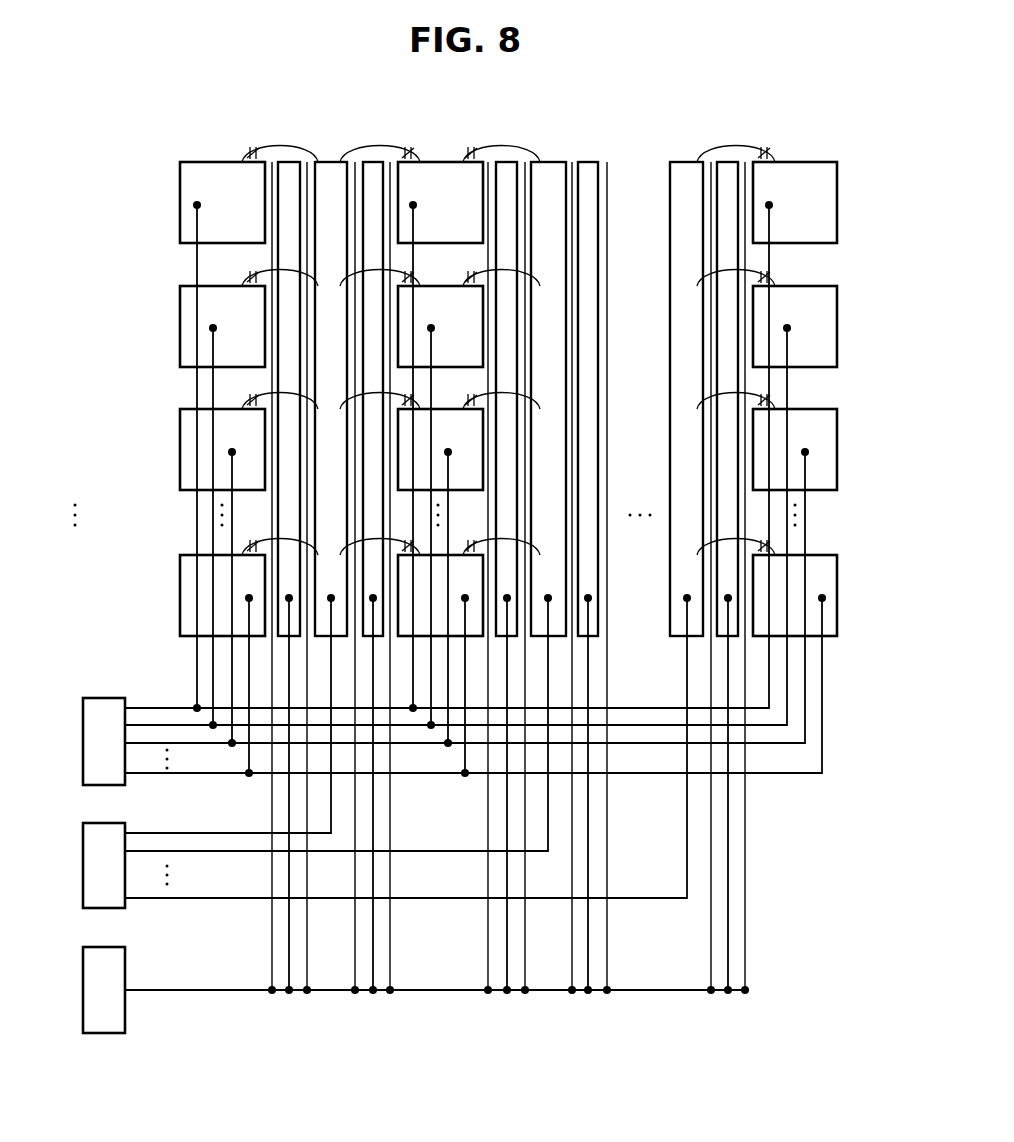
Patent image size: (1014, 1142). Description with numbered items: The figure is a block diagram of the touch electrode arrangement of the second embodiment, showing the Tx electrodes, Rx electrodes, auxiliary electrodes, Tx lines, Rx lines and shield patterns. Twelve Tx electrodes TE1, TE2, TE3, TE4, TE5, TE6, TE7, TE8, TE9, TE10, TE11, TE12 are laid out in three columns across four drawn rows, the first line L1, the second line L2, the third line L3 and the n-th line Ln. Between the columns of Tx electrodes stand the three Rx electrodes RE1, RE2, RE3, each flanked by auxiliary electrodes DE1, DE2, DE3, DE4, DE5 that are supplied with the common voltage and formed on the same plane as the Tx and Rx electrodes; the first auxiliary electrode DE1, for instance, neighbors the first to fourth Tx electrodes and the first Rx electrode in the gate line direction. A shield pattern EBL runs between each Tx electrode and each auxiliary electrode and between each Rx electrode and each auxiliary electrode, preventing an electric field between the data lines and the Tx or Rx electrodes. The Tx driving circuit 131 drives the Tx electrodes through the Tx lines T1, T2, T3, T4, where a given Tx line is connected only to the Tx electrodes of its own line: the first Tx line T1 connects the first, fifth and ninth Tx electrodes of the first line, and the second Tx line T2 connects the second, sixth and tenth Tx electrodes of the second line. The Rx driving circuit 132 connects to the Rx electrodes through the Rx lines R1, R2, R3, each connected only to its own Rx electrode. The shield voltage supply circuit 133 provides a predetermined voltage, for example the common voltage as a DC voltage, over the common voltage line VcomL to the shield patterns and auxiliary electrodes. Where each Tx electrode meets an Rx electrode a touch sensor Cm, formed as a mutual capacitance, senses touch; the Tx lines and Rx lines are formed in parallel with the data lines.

The Tx driving circuit 131 is at (83, 738).
The Rx driving circuit 132 is at (83, 863).
The shield voltage supply circuit 133 is at (83, 990).
The first Tx electrode TE1 is at (180, 181).
The second Tx electrode TE2 is at (180, 305).
The third Tx electrode TE3 is at (180, 428).
The fourth Tx electrode TE4 is at (180, 574).
The fifth Tx electrode TE5 is at (430, 160).
The sixth Tx electrode TE6 is at (435, 284).
The seventh Tx electrode TE7 is at (435, 407).
The eighth Tx electrode TE8 is at (453, 553).
The ninth Tx electrode TE9 is at (837, 213).
The tenth Tx electrode TE10 is at (837, 338).
The eleventh Tx electrode TE11 is at (837, 462).
The twelfth Tx electrode TE12 is at (837, 607).
The first auxiliary electrode DE1 is at (288, 162).
The second auxiliary electrode DE2 is at (373, 162).
The third auxiliary electrode DE3 is at (505, 162).
The fourth auxiliary electrode DE4 is at (588, 162).
The fifth auxiliary electrode DE5 is at (728, 162).
The first Rx electrode RE1 is at (328, 162).
The second Rx electrode RE2 is at (547, 162).
The third Rx electrode RE3 is at (688, 162).
The shield pattern EBL is at (271, 162).
The touch sensor Cm is at (765, 150).
The first line L1 is at (77, 202).
The second line L2 is at (77, 325).
The third line L3 is at (77, 448).
The n-th line Ln is at (78, 595).
The first Tx line T1 is at (142, 707).
The second Tx line T2 is at (165, 724).
The third Tx line T3 is at (188, 744).
The fourth Tx line T4 is at (222, 774).
The first Rx line R1 is at (150, 834).
The second Rx line R2 is at (188, 852).
The third Rx line R3 is at (228, 899).
The common voltage line VcomL is at (288, 974).